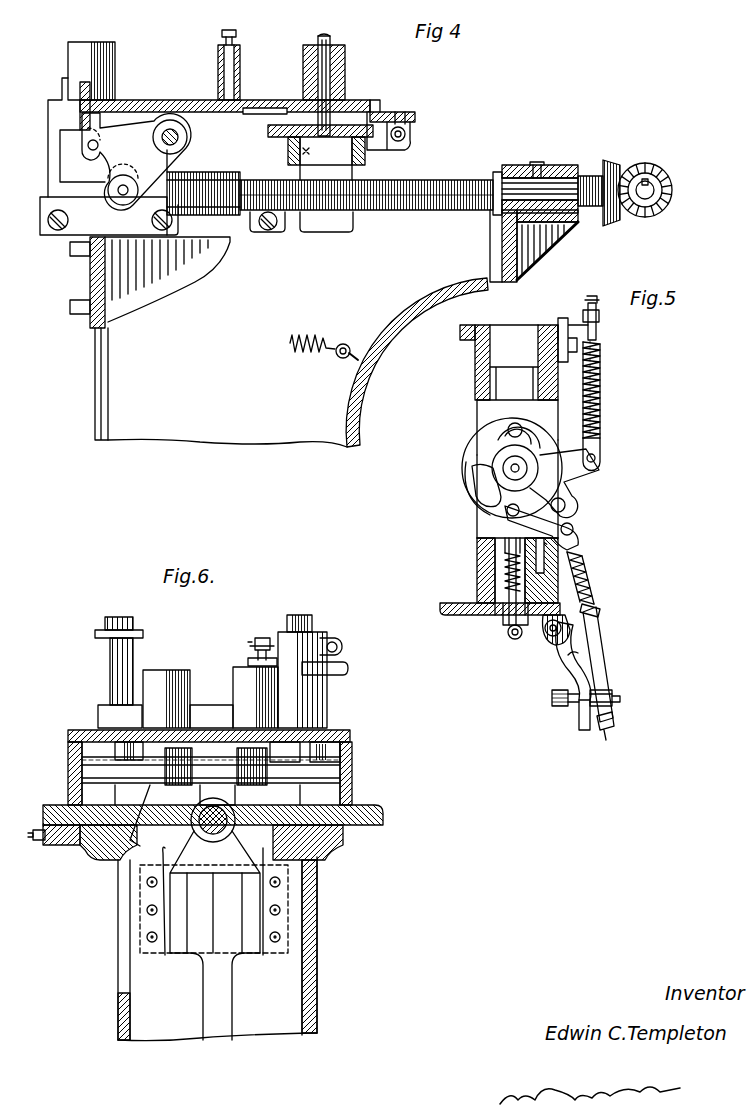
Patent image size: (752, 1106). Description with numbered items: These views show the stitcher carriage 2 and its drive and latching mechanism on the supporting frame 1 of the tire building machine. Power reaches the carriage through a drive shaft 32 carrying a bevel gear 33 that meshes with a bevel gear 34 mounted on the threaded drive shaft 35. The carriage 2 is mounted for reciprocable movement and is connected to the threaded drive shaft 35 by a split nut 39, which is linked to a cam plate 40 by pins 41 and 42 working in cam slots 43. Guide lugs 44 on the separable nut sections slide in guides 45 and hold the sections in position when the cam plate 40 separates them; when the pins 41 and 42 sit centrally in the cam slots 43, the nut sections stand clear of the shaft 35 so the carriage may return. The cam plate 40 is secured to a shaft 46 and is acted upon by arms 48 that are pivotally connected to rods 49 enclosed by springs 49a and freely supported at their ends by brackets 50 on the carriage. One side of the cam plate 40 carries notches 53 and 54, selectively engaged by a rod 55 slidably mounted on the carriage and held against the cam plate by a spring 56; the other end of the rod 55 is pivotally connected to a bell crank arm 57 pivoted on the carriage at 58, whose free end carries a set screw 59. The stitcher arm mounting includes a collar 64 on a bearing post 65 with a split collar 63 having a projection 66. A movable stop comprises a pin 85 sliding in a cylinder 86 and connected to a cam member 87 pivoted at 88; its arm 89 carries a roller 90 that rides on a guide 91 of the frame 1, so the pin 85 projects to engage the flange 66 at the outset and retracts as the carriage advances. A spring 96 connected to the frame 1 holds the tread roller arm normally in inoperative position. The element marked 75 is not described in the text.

In FIG. 4, the supporting frame 1 is at (355, 410).
In FIG. 6, the supporting frame 1 is at (311, 932).
In FIG. 4, the stitcher carriage 2 is at (272, 105).
In FIG. 6, the stitcher carriage 2 is at (384, 814).
In FIG. 4, the drive shaft 32 is at (648, 188).
In FIG. 4, the bevel gear 33 is at (668, 213).
In FIG. 4, the bevel gear 34 is at (611, 222).
In FIG. 4, the threaded drive shaft 35 is at (463, 188).
In FIG. 6, the threaded drive shaft 35 is at (212, 822).
In FIG. 4, the split nut 39 is at (327, 224).
In FIG. 4, the cam plate 40 is at (270, 128).
In FIG. 5, the cam plate 40 is at (553, 481).
In FIG. 5, the pin 41 is at (508, 429).
In FIG. 5, the pin 42 is at (507, 511).
In FIG. 5, the cam slots 43 is at (551, 440).
In FIG. 4, the guide lugs 44 is at (306, 152).
In FIG. 4, the guides 45 is at (300, 160).
In FIG. 4, the shaft 46 is at (330, 40).
In FIG. 5, the arms 48 is at (600, 468).
In FIG. 5, the rods 49 is at (601, 345).
In FIG. 5, the springs 49a is at (601, 376).
In FIG. 5, the brackets 50 is at (595, 318).
In FIG. 5, the notch 53 is at (470, 480).
In FIG. 5, the notch 54 is at (505, 538).
In FIG. 5, the rod 55 is at (510, 620).
In FIG. 5, the spring 56 is at (477, 584).
In FIG. 5, the bell crank arm 57 is at (538, 634).
In FIG. 5, the pivot 58 is at (563, 631).
In FIG. 5, the set screw 59 is at (553, 703).
In FIG. 6, the split collar 63 is at (328, 637).
In FIG. 6, the collar 64 is at (311, 689).
In FIG. 6, the bearing member or post 65 is at (134, 650).
In FIG. 6, the projection 66 is at (257, 660).
In FIG. 4, the screw 75 is at (238, 33).
In FIG. 4, the pin 85 is at (100, 128).
In FIG. 6, the pin 85 is at (250, 744).
In FIG. 4, the cylinder 86 is at (80, 58).
In FIG. 6, the cylinder 86 is at (152, 690).
In FIG. 4, the cam member 87 is at (137, 137).
In FIG. 4, the pivot 88 is at (186, 137).
In FIG. 4, the arm 89 is at (133, 170).
In FIG. 4, the roller 90 is at (117, 182).
In FIG. 4, the guide 91 is at (42, 201).
In FIG. 4, the spring 96 is at (326, 352).